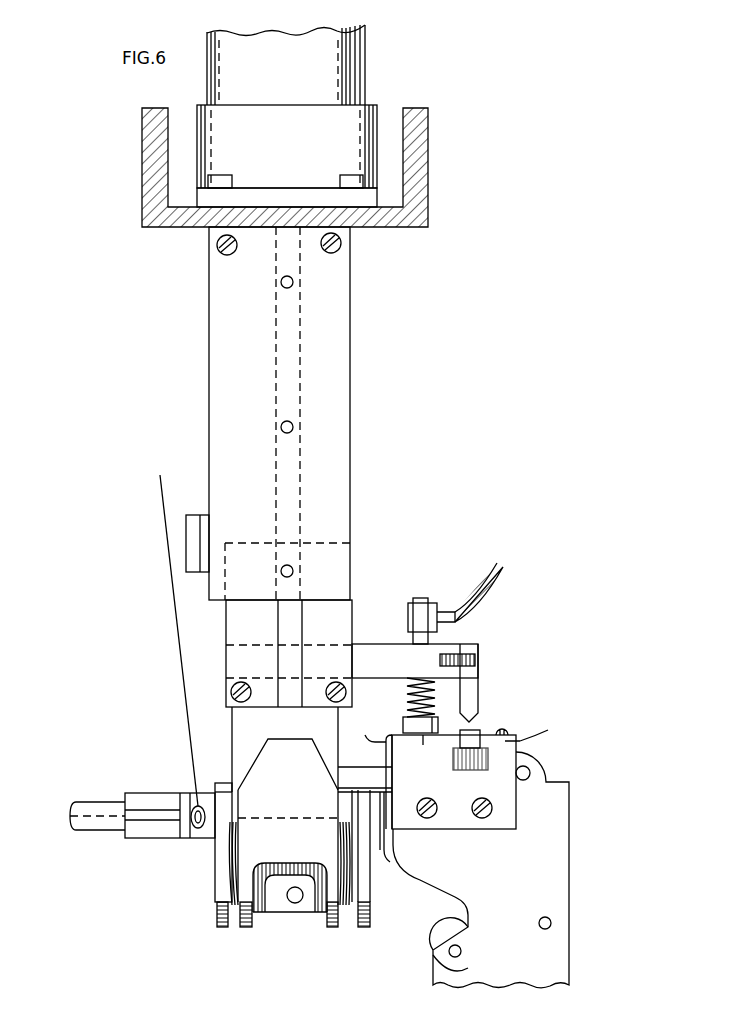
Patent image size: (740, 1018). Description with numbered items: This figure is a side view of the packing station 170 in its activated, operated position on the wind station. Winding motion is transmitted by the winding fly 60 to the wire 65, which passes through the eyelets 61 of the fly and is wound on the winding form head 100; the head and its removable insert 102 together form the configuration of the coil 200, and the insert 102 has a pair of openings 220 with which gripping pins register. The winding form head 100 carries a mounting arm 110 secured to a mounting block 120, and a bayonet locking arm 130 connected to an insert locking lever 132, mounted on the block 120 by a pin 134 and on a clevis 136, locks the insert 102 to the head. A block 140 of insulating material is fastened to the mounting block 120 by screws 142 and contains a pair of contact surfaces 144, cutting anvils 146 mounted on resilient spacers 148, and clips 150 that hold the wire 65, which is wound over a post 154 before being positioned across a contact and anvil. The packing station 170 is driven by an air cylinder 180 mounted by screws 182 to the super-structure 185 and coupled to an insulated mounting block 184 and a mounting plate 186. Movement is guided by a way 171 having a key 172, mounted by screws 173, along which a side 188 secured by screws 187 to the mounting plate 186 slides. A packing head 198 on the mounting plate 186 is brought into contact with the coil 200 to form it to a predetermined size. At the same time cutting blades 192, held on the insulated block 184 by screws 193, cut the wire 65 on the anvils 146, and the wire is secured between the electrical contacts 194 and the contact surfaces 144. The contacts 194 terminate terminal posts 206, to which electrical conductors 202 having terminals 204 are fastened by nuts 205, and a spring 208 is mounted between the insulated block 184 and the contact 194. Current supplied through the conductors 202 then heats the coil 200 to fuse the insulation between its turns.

The winding fly 60 is at (144, 838).
The eyelets 61 is at (200, 830).
The wire 65 is at (170, 578).
The winding form head 100 is at (215, 876).
The removable insert 102 is at (278, 914).
The mounting arm 110 is at (385, 852).
The mounting block 120 is at (569, 882).
The bayonet locking arm 130 is at (388, 772).
The insert locking lever 132 is at (540, 765).
The pin 134 is at (540, 919).
The clevis 136 is at (437, 970).
The block of insulating material 140 is at (512, 820).
The screws 142 is at (480, 817).
The contact surfaces 144 is at (424, 748).
The cutting anvils 146 is at (480, 745).
The resilient spacers 148 is at (465, 765).
The clips 150 is at (508, 733).
The post 154 is at (385, 757).
The packing station 170 is at (410, 463).
The way 171 is at (218, 322).
The key 172 is at (300, 353).
The screws 173 is at (320, 247).
The air cylinder 180 is at (360, 66).
The screws 182 is at (340, 178).
The super-structure 185 is at (423, 165).
The insulated mounting block 184 is at (378, 654).
The mounting plate 186 is at (238, 678).
The screws 187 is at (328, 700).
The side 188 is at (235, 623).
The cutting blades 192 is at (478, 690).
The screws 193 is at (476, 660).
The electrical contacts 194 is at (405, 722).
The packing head 198 is at (238, 752).
The coil 200 is at (345, 915).
The electrical conductors 202 is at (497, 570).
The terminals 204 is at (455, 618).
The nuts 205 is at (410, 618).
The terminal posts 206 is at (420, 600).
The spring 208 is at (408, 692).
The openings 220 is at (297, 905).